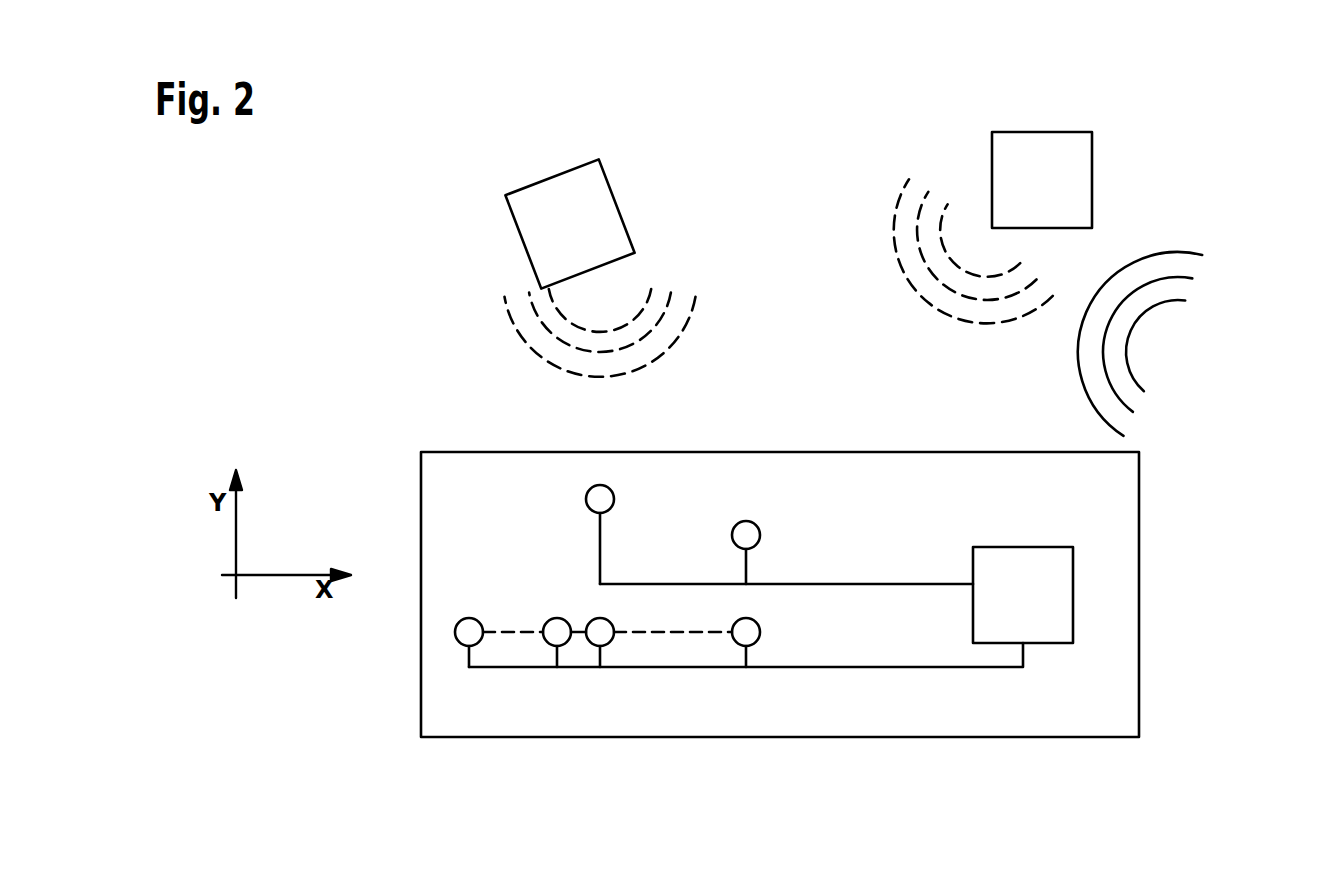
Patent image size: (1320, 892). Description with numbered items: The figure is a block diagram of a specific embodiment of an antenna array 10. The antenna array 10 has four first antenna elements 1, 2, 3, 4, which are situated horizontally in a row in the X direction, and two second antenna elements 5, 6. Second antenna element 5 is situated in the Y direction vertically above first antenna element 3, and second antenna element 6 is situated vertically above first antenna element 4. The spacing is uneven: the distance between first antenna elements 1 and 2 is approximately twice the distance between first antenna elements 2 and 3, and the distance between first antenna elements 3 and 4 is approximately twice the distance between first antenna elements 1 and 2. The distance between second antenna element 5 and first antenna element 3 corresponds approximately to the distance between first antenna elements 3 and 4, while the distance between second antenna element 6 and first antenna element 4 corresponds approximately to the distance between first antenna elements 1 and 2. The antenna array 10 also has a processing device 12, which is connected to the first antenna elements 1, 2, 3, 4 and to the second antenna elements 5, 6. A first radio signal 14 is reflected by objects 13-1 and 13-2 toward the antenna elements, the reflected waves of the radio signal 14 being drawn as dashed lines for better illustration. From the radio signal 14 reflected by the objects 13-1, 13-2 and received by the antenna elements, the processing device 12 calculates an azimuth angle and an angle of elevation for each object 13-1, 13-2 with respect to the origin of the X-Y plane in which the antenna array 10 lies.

The first antenna element 1 is at (455, 632).
The first antenna element 2 is at (567, 643).
The first antenna element 3 is at (609, 643).
The first antenna element 4 is at (760, 630).
The second antenna element 5 is at (586, 499).
The second antenna element 6 is at (760, 533).
The antenna array 10 is at (1140, 534).
The processing device 12 is at (1073, 595).
The object 13-1 is at (622, 202).
The object 13-2 is at (1092, 180).
The first radio signal 14 is at (690, 325).